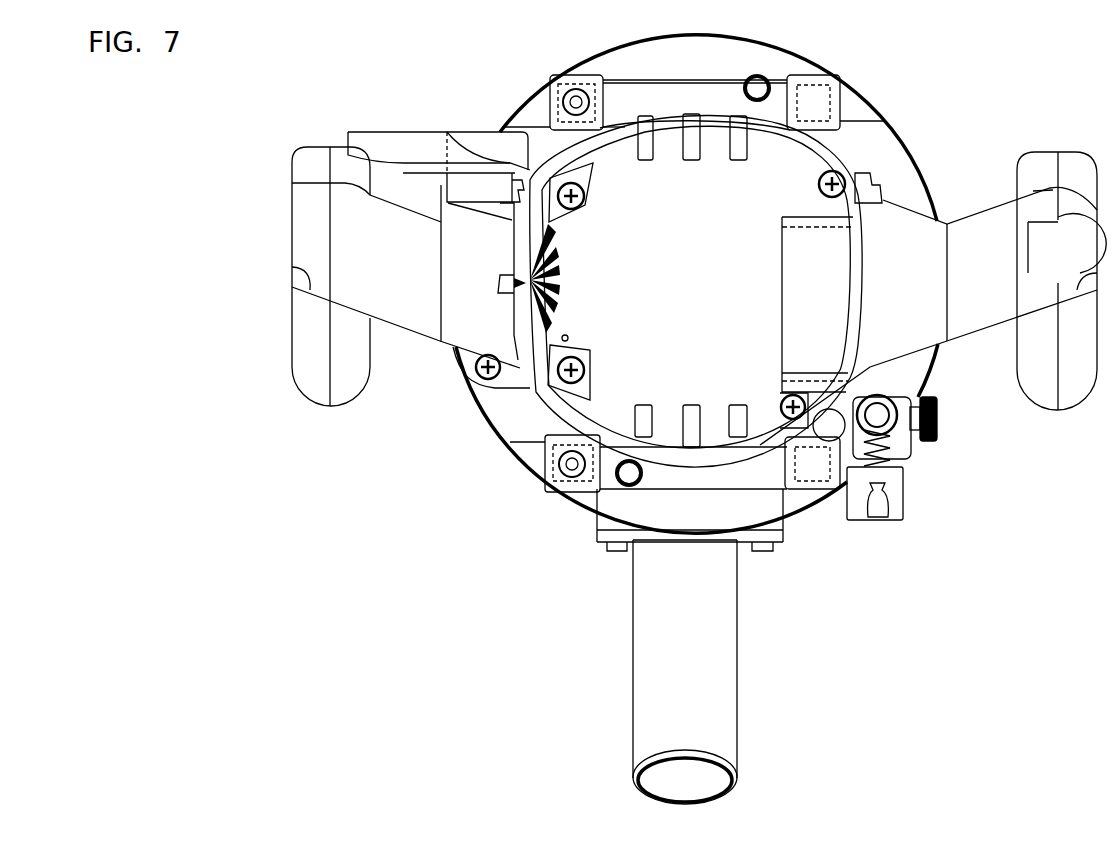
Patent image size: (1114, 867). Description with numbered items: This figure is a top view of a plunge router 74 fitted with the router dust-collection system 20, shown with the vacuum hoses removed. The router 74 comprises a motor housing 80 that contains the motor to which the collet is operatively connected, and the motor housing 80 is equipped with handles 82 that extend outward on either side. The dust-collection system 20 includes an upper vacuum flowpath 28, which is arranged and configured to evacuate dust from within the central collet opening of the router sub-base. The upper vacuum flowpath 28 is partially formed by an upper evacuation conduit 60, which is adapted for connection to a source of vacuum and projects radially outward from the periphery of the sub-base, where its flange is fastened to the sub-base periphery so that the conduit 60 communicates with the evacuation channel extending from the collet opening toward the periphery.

The router dust-collection system 20 is at (598, 580).
The upper vacuum flowpath 28 is at (664, 818).
The upper evacuation conduit 60 is at (740, 744).
The router 74 is at (828, 55).
The motor housing 80 is at (822, 152).
The handles 82 is at (305, 407).